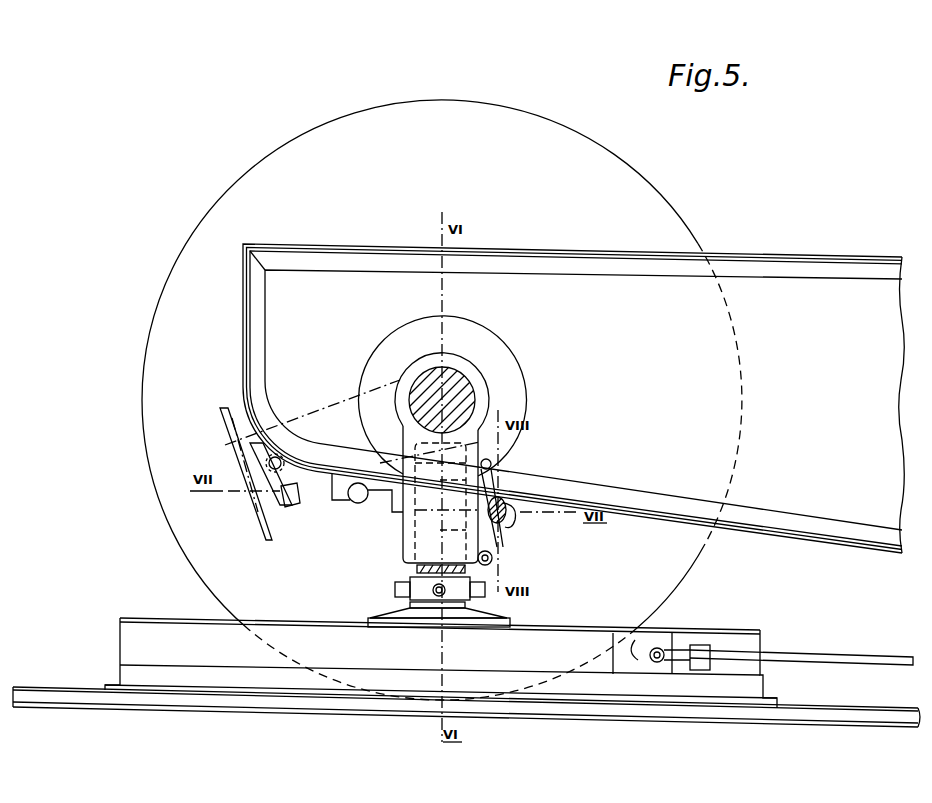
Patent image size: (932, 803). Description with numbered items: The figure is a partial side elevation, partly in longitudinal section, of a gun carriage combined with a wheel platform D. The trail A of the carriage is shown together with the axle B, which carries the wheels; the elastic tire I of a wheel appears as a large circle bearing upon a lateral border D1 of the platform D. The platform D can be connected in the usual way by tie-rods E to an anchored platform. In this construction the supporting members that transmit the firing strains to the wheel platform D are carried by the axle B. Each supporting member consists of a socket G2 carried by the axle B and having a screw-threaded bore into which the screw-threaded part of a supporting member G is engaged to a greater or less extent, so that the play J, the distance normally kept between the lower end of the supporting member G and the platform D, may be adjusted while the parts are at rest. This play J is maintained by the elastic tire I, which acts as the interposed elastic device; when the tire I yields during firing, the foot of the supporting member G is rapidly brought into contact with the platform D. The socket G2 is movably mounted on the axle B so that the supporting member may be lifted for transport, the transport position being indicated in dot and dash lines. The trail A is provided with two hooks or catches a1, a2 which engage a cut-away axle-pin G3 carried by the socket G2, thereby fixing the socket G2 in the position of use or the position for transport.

The elastic tire I is at (556, 127).
The trail A is at (795, 254).
The axle B is at (470, 392).
The wheel platform D is at (296, 630).
The lateral border D1 is at (842, 700).
The tie-rod E is at (863, 661).
The play J is at (510, 624).
The supporting member G is at (393, 572).
The socket G2 is at (425, 540).
The cut-away axle-pin G3 is at (503, 527).
The hook or catch a1 is at (512, 517).
The hook or catch a2 is at (356, 504).